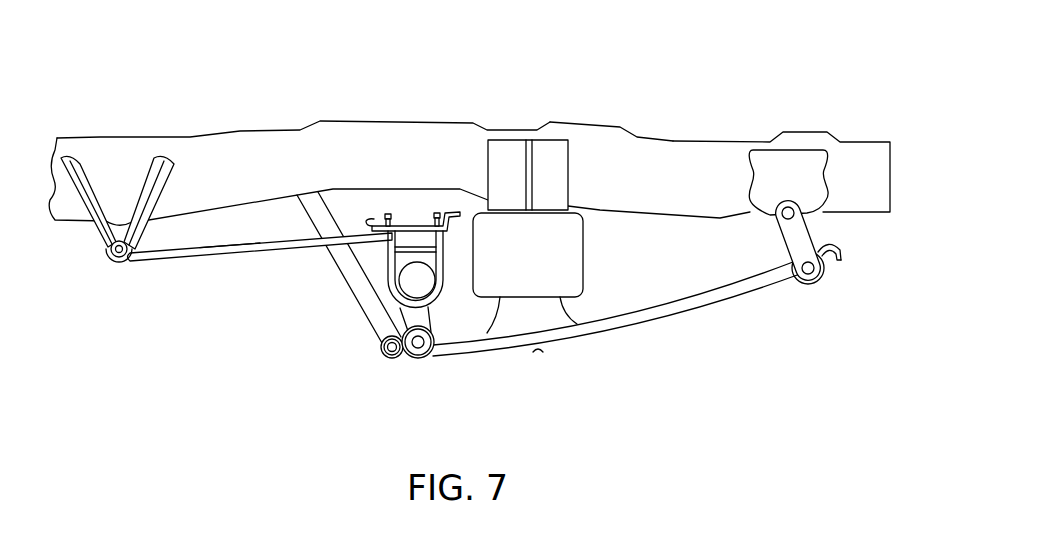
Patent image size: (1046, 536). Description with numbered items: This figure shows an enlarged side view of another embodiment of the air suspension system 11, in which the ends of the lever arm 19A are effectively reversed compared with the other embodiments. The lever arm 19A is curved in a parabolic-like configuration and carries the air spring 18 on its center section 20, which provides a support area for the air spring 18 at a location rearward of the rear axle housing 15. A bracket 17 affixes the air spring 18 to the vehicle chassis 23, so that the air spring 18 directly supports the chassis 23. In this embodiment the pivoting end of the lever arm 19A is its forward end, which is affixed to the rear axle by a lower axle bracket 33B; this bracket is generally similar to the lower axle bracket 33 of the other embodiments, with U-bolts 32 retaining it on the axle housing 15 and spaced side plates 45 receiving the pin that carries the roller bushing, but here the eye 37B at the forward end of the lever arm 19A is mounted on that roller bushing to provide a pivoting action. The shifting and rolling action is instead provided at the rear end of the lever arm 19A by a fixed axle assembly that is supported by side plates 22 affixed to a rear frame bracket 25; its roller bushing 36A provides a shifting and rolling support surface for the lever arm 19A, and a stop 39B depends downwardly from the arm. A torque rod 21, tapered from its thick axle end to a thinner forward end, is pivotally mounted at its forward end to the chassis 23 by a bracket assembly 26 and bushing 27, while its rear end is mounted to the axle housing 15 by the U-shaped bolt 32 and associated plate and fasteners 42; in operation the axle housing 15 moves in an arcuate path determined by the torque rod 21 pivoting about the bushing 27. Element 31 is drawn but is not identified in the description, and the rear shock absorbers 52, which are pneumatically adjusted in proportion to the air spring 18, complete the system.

The air suspension system 11 is at (710, 339).
The rear axle housing 15 is at (410, 283).
The bracket 17 is at (570, 168).
The air spring 18 is at (582, 254).
The lever arm 19A is at (635, 325).
The center section 20 is at (567, 335).
The torque rod 21 is at (260, 252).
The side plates 22 is at (813, 236).
The chassis 23 is at (613, 122).
The rear frame bracket 25 is at (790, 153).
The bracket assembly 26 is at (90, 222).
The bushing 27 is at (121, 266).
The nub 31 is at (540, 353).
The U-shaped bolt 32 is at (387, 261).
The lower axle bracket 33 is at (827, 291).
The lower axle bracket 33B is at (413, 357).
The roller bushing 36A is at (808, 288).
The eye 37B is at (420, 358).
The stop 39B is at (843, 248).
The plate and fasteners 42 is at (371, 219).
The side plates 45 is at (413, 318).
The rear shock absorbers 52 is at (230, 234).